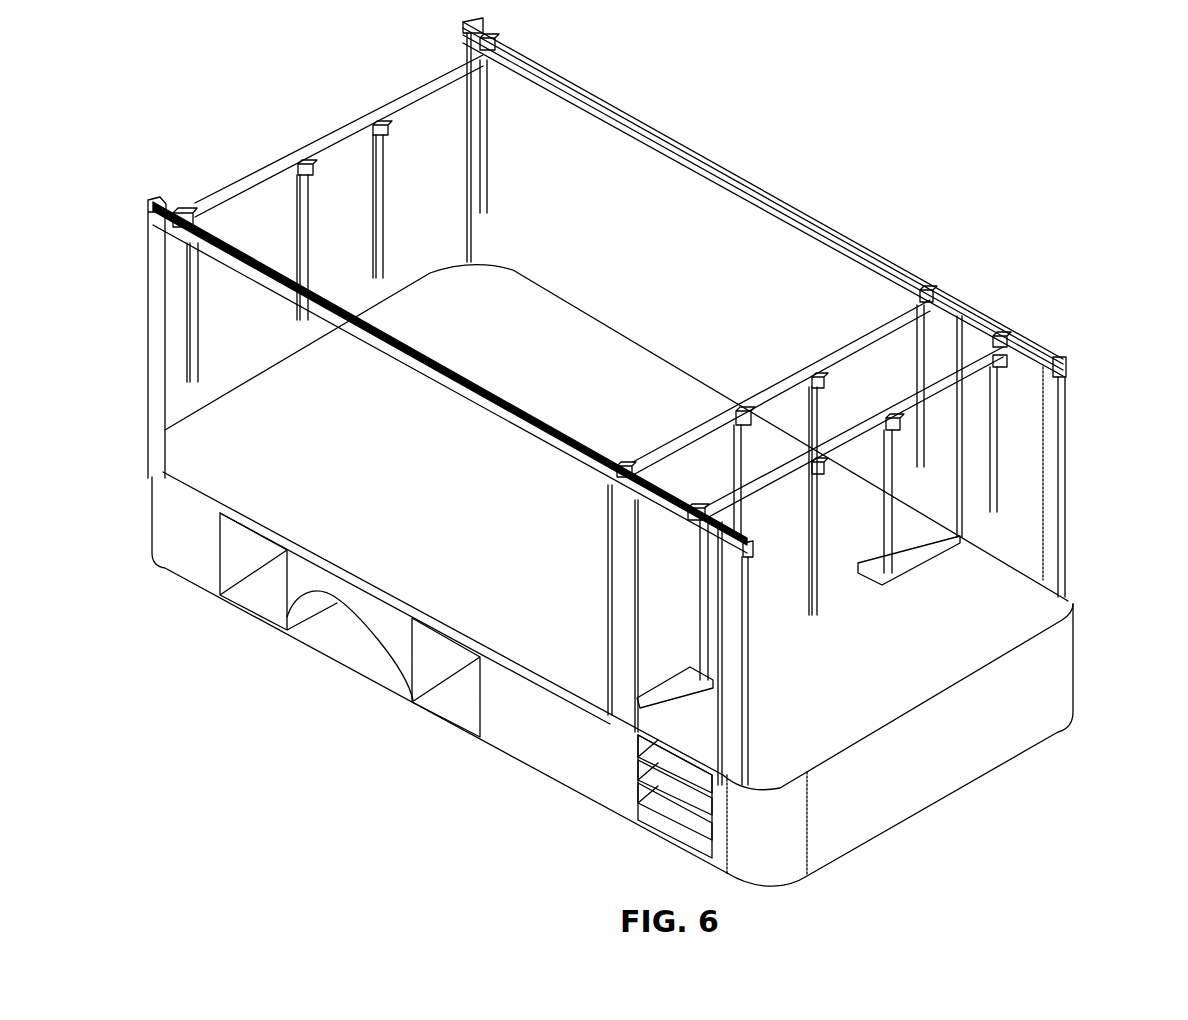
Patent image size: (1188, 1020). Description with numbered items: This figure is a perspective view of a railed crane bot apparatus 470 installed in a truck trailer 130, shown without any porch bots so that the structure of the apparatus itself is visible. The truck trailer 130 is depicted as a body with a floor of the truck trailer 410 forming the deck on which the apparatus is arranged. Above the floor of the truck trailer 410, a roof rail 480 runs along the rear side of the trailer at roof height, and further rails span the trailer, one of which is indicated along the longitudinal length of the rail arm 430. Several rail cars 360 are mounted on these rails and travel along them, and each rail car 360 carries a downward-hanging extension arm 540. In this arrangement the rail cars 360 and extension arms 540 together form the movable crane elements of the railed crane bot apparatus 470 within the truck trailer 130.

The truck trailer 130 is at (917, 800).
The rail car 360 is at (310, 163).
The floor of the truck trailer 410 is at (1052, 622).
The longitudinal length of the rail arm 430 is at (297, 243).
The railed crane bot apparatus 470 is at (607, 401).
The roof rail 480 is at (732, 166).
The extension arm 540 is at (378, 192).